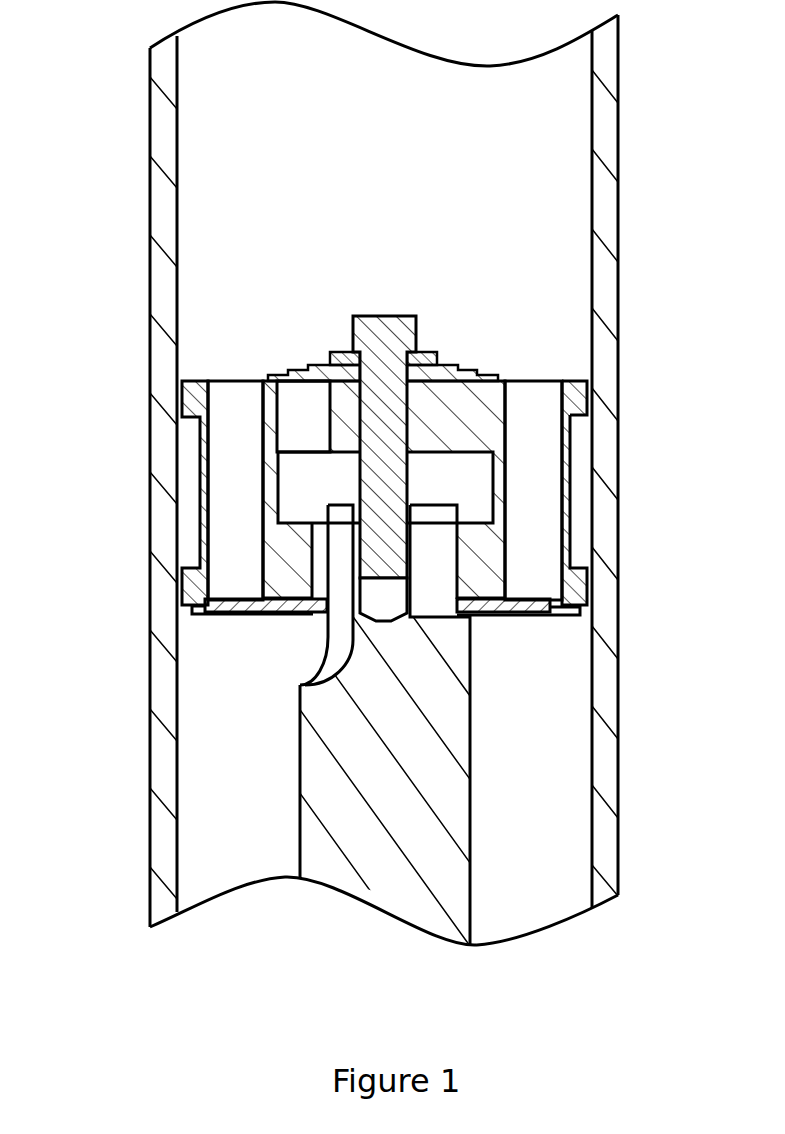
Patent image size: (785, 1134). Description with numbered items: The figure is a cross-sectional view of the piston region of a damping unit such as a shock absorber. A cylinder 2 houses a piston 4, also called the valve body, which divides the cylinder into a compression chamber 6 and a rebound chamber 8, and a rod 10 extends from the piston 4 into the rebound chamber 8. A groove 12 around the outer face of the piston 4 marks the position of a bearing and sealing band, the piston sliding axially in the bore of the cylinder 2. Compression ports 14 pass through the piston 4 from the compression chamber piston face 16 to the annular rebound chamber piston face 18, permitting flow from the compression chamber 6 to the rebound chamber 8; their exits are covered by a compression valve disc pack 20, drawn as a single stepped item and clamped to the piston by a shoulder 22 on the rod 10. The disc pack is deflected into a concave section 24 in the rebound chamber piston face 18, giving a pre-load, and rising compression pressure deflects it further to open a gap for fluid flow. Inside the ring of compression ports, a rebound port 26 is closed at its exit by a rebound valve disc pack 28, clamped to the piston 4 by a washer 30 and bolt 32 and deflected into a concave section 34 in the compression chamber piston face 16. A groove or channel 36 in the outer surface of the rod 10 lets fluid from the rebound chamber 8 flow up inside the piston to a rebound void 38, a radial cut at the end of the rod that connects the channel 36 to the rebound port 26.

The cylinder 2 is at (605, 74).
The piston 4 is at (478, 437).
The compression chamber 6 is at (487, 139).
The rebound chamber 8 is at (535, 838).
The rod 10 is at (450, 880).
The groove 12 is at (573, 525).
The compression ports 14 is at (235, 525).
The compression chamber piston face 16 is at (570, 378).
The annular rebound chamber piston face 18 is at (583, 607).
The compression valve disc pack 20 is at (222, 615).
The shoulder 22 is at (470, 620).
The concave section 24 is at (265, 617).
The rebound port 26 is at (295, 415).
The rebound valve disc pack 28 is at (322, 378).
The washer 30 is at (343, 355).
The bolt 32 is at (365, 333).
The concave section 34 is at (473, 363).
The groove or channel 36 is at (322, 660).
The rebound void 38 is at (298, 490).